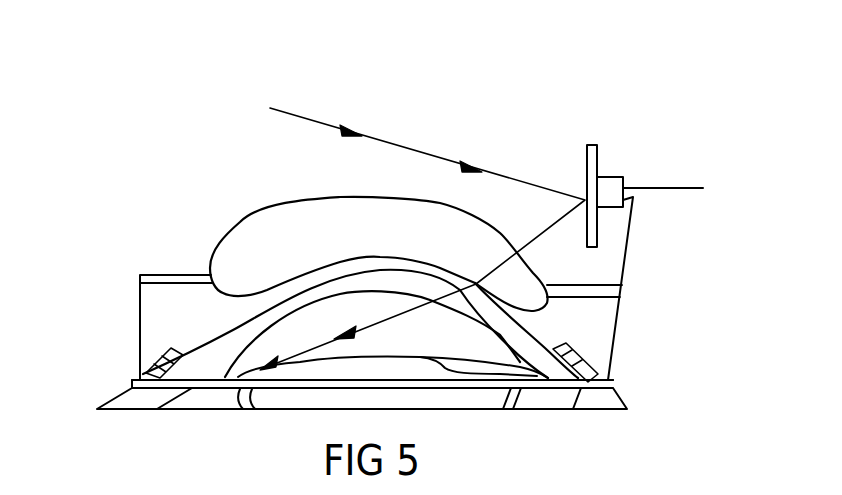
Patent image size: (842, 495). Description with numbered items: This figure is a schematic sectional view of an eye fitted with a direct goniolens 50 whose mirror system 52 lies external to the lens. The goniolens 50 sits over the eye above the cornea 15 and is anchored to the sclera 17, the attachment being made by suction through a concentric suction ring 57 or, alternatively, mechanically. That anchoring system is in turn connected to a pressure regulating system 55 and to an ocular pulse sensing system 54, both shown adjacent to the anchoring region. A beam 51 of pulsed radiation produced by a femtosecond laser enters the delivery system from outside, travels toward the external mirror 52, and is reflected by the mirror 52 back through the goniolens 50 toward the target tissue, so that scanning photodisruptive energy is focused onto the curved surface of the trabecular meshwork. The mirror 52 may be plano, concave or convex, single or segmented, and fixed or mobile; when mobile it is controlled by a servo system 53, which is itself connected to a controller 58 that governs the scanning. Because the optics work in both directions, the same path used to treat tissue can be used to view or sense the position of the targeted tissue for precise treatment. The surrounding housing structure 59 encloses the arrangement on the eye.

The cornea 15 is at (240, 331).
The sclera 17 is at (133, 398).
The goniolens 50 is at (379, 254).
The beam 51 is at (380, 138).
The mirror 52 is at (599, 153).
The servo system 53 is at (625, 183).
The ocular pulse sensing system 54 is at (585, 352).
The pressure regulating system 55 is at (612, 362).
The suction ring 57 is at (585, 385).
The controller 58 is at (703, 188).
The housing frame 59 is at (603, 290).